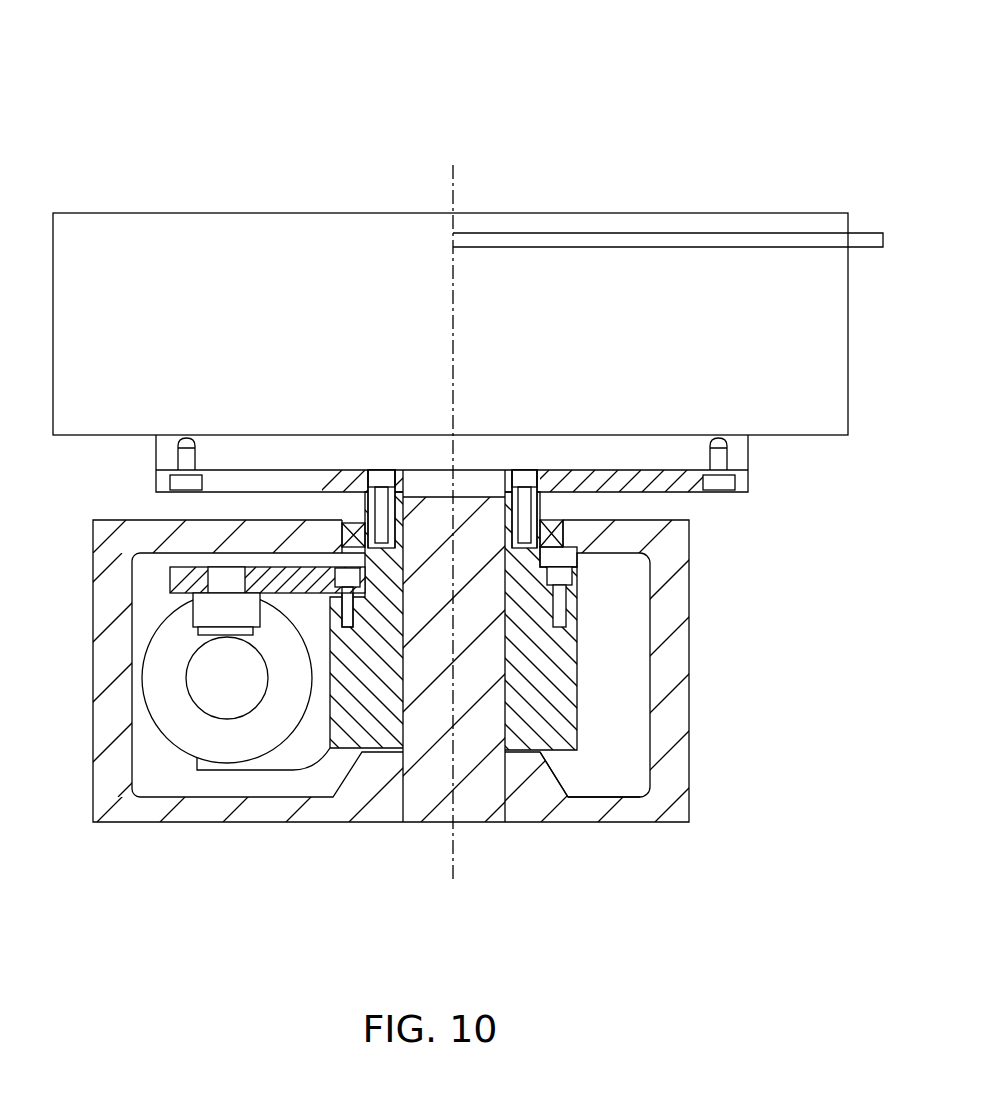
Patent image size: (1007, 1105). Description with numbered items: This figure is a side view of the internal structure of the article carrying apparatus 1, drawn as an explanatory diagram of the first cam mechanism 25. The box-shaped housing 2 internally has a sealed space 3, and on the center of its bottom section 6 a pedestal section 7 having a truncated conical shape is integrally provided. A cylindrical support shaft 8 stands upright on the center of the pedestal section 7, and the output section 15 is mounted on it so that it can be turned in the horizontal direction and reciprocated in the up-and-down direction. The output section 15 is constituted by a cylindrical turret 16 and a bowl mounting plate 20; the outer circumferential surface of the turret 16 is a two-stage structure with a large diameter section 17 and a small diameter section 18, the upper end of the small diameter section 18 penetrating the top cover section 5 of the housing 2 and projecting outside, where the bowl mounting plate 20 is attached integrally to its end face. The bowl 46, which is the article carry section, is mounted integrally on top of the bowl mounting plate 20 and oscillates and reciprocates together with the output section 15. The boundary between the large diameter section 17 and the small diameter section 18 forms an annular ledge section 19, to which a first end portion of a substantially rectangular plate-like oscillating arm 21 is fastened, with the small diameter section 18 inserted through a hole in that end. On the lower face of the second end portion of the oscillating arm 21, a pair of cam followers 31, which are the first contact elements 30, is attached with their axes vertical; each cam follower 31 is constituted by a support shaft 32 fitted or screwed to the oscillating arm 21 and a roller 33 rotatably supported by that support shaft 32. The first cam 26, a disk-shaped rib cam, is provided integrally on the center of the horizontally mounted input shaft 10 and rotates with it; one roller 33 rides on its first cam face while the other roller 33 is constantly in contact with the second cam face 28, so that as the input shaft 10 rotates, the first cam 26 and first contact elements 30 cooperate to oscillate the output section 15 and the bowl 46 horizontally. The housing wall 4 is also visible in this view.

The article carrying apparatus 1 is at (205, 111).
The bowl 46 is at (322, 226).
The bowl mounting plate 20 is at (742, 477).
The top cover section 5 is at (623, 523).
The output section 15 is at (348, 503).
The ledge section 19 is at (343, 550).
The small diameter section 18 is at (540, 556).
The support shaft 32 is at (228, 577).
The oscillating arm 21 is at (190, 567).
The first contact elements 30 is at (180, 612).
The first cam mechanism 25 is at (137, 628).
The roller 33 is at (212, 624).
The cam follower 31 is at (219, 645).
The first cam 26 is at (163, 720).
The second cam face 28 is at (177, 740).
The input shaft 10 is at (223, 693).
The bottom section 6 is at (265, 806).
The support shaft 8 is at (488, 660).
The large diameter section 17 is at (562, 680).
The turret 16 is at (587, 712).
The housing 2 is at (700, 645).
The side wall 4 is at (680, 720).
The pedestal section 7 is at (552, 783).
The space 3 is at (612, 783).